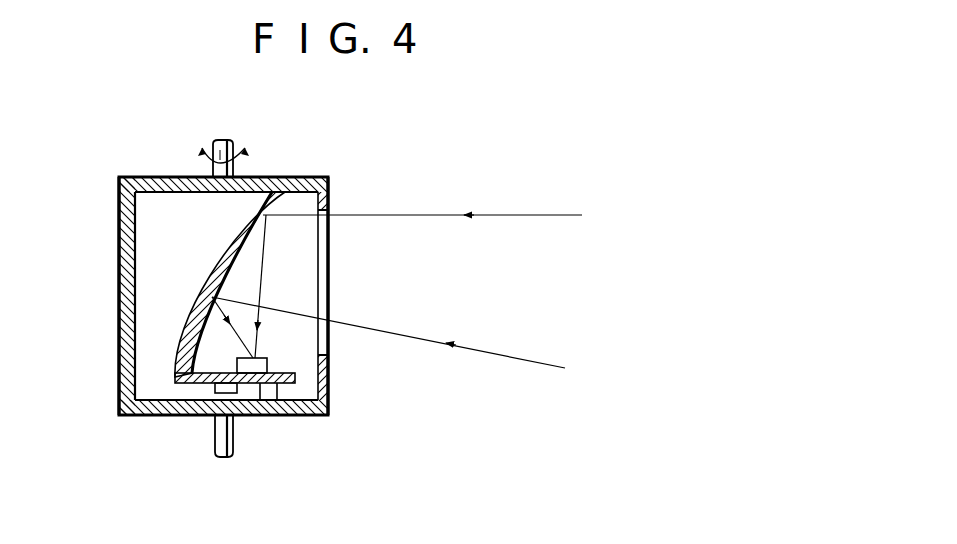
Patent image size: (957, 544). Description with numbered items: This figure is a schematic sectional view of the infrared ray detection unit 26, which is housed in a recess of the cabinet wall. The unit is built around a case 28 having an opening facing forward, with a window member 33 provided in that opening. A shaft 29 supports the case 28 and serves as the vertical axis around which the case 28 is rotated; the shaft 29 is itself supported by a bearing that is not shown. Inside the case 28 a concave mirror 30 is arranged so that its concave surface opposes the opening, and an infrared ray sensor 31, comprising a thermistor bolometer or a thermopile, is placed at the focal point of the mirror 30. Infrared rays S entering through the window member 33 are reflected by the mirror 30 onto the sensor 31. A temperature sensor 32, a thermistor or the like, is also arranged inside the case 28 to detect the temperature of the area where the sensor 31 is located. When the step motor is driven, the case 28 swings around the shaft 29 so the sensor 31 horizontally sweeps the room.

The infrared ray detection unit 26 is at (310, 177).
The case 28 is at (124, 198).
The shaft 29 is at (235, 142).
The concave mirror 30 is at (236, 262).
The infrared ray sensor 31 is at (268, 366).
The temperature sensor 32 is at (215, 387).
The window member 33 is at (329, 372).
The infrared rays S is at (441, 213).